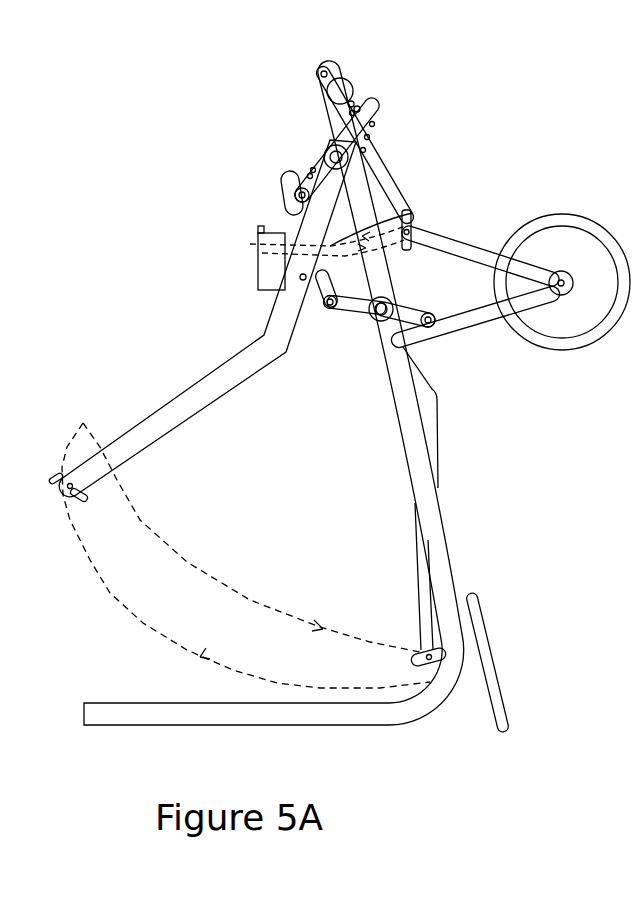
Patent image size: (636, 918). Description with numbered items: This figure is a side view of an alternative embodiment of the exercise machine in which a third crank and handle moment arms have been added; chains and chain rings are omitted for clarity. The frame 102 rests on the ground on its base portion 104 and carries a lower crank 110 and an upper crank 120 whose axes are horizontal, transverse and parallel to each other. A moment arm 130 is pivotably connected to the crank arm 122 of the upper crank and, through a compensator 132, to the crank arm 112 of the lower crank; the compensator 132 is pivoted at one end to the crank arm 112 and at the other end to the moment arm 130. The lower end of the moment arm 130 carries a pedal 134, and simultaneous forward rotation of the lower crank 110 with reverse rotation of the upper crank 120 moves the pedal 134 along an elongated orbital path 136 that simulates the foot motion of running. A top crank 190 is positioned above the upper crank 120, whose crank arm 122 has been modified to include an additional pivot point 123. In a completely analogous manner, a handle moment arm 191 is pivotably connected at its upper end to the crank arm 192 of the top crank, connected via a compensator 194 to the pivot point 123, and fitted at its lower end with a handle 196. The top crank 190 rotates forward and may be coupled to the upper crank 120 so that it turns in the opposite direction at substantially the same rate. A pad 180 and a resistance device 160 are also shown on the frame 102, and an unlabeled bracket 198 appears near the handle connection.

The frame 102 is at (425, 489).
The base portion 104 is at (496, 697).
The lower crank 110 is at (387, 302).
The crank arm 112 is at (396, 318).
The upper crank 120 is at (372, 168).
The crank arm 122 is at (310, 173).
The pivot point 123 is at (360, 103).
The moment arm 130 is at (425, 400).
The compensator 132 is at (429, 316).
The pedal 134 is at (421, 651).
The elongated orbital path 136 is at (223, 611).
The resistance device 160 is at (558, 226).
The pad 180 is at (270, 257).
The top crank 190 is at (340, 92).
The handle moment arm 191 is at (372, 156).
The crank arm 192 is at (357, 103).
The compensator 194 is at (377, 130).
The handle 196 is at (413, 218).
The bracket 198 is at (408, 208).